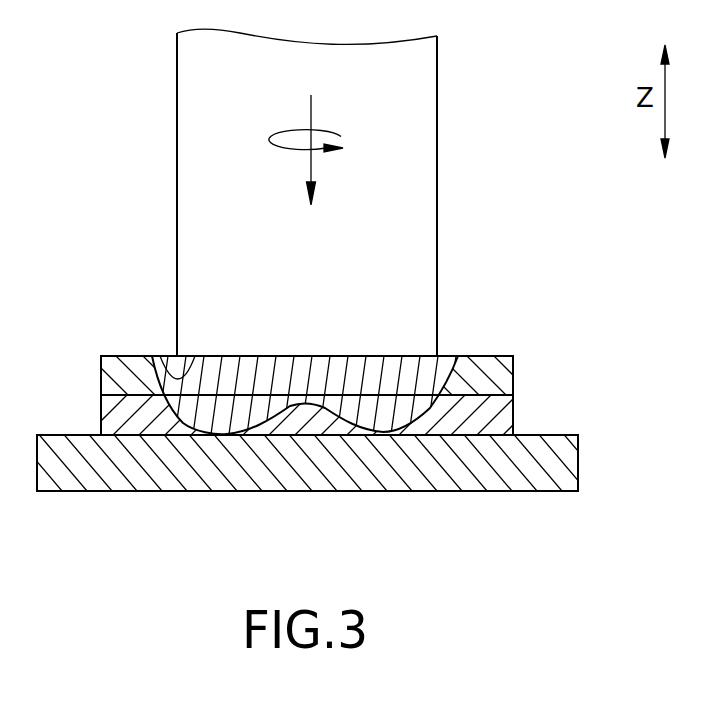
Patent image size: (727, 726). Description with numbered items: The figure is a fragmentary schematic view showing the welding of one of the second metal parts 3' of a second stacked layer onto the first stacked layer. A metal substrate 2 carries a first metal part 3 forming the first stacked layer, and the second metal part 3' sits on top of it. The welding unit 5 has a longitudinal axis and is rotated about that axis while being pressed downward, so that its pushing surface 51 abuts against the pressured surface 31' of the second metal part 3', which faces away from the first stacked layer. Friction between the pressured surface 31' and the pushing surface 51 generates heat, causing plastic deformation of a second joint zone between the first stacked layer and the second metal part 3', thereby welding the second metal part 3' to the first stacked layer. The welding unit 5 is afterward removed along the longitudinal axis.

The welding unit 5 is at (176, 97).
The pushing surface 51 is at (165, 383).
The pressured surface 31' is at (314, 345).
The metal substrate 2 is at (566, 414).
The first metal part 3 is at (283, 415).
The second metal part 3' is at (278, 370).